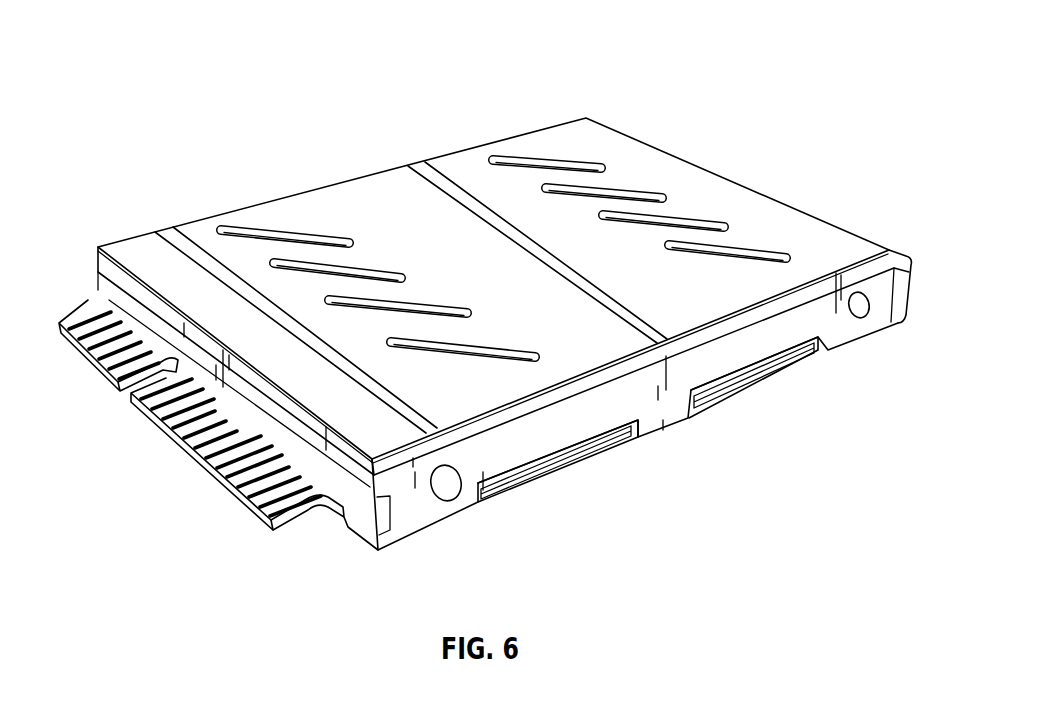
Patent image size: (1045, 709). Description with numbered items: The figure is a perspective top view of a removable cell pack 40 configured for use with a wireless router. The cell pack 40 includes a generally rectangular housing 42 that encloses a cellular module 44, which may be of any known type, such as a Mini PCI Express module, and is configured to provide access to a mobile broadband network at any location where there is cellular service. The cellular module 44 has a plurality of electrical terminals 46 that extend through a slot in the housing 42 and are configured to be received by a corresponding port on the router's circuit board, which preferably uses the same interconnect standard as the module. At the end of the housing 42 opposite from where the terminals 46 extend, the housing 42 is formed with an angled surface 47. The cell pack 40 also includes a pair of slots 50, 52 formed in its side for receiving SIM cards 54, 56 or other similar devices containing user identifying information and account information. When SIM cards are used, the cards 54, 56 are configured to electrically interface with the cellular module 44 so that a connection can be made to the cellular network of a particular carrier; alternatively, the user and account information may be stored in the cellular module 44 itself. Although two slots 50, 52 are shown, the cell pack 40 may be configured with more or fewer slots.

The removable cell pack 40 is at (660, 76).
The housing 42 is at (388, 185).
The cellular module 44 is at (100, 308).
The electrical terminals 46 is at (187, 425).
The angled surface 47 is at (858, 232).
The slot 50 is at (500, 494).
The slot 52 is at (706, 405).
The SIM card 54 is at (604, 443).
The SIM card 56 is at (777, 370).